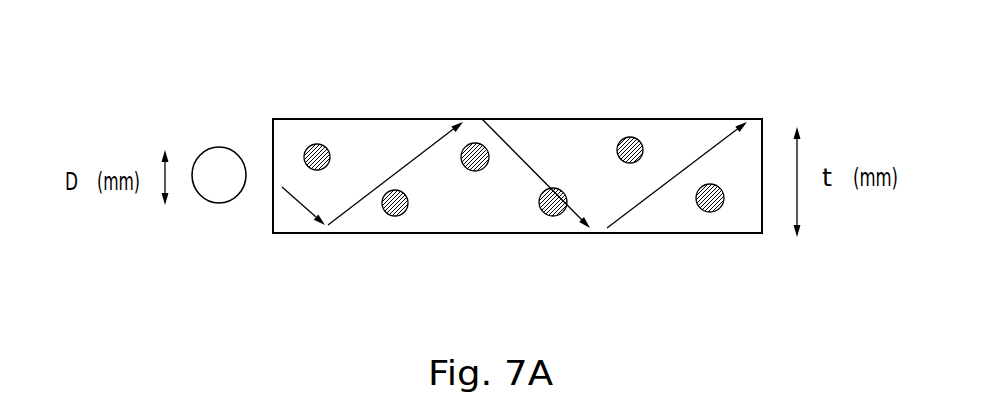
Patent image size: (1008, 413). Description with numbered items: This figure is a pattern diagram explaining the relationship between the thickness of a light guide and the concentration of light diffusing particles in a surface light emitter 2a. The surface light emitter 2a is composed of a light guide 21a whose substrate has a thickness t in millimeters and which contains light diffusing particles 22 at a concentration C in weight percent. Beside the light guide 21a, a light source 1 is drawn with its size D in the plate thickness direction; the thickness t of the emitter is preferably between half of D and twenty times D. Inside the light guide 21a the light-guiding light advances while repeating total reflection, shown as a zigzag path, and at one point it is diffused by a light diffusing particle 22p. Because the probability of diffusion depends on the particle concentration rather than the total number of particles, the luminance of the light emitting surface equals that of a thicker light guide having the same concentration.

The light source 1 is at (213, 148).
The surface light emitter 2a is at (696, 67).
The light guide 21a is at (712, 118).
The light diffusing particles 22 is at (710, 203).
The light diffusing particle 22p is at (553, 210).